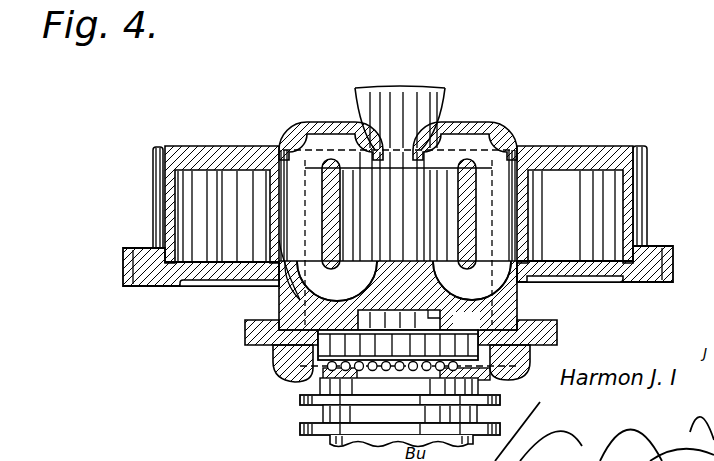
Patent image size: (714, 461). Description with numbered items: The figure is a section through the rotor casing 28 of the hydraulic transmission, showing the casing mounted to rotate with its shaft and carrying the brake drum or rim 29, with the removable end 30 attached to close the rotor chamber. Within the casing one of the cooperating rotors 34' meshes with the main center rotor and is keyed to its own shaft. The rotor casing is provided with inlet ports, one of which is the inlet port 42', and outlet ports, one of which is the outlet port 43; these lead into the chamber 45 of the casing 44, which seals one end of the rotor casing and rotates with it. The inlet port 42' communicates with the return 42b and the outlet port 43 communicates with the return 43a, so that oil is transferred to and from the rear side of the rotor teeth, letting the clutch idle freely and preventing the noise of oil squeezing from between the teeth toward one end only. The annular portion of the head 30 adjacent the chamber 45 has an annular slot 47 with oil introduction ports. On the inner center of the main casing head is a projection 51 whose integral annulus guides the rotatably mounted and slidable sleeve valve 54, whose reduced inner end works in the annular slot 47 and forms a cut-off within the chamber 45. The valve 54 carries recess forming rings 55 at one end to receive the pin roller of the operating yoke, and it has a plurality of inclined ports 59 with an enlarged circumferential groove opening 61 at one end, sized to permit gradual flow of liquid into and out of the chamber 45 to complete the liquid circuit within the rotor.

The rotor casing 28 is at (575, 153).
The brake drum or rim 29 is at (668, 200).
The removable end 30 is at (637, 284).
The cooperating rotor 34' is at (422, 133).
The inlet port 42' is at (465, 215).
The return 42b is at (508, 209).
The outlet port 43 is at (347, 147).
The return 43a is at (287, 237).
The casing 44 is at (522, 358).
The chamber 45 is at (290, 360).
The annular slot 47 is at (433, 308).
The projection 51 is at (332, 440).
The sleeve valve 54 is at (320, 388).
The recess forming rings 55 is at (300, 404).
The inclined ports 59 is at (367, 371).
The circumferential groove opening 61 is at (374, 358).